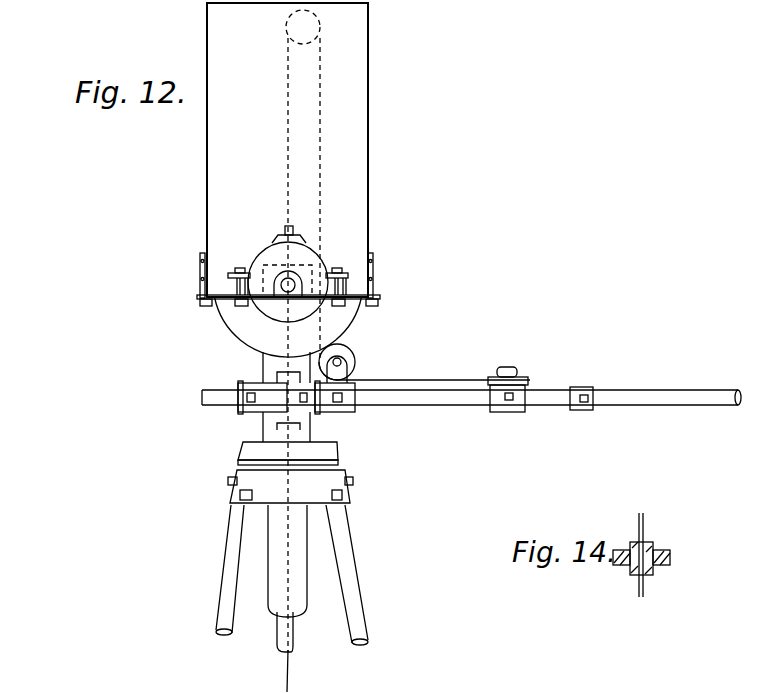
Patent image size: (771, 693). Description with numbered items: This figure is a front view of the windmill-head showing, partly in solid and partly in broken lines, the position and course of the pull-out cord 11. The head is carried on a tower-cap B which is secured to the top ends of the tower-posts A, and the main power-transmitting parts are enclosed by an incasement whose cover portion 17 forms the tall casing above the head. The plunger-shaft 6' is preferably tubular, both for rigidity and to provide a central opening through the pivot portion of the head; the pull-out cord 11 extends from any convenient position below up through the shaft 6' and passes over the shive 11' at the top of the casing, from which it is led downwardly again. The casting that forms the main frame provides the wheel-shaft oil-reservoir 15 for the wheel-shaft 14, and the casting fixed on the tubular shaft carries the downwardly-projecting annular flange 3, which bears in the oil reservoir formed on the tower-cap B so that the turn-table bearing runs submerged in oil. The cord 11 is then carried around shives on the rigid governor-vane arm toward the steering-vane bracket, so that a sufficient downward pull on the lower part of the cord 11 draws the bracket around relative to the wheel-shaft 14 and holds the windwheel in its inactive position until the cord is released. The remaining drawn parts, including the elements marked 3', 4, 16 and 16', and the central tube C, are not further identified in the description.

In FIG. 12, the pull-out cord 11 is at (394, 365).
In FIG. 14, the pull-out cord 11 is at (655, 555).
In FIG. 12, the shive 11' is at (319, 27).
In FIG. 12, the cover portion 17 is at (368, 72).
In FIG. 12, the wheel-shaft 14 is at (265, 304).
In FIG. 12, the wheel-shaft oil-reservoir 15 is at (282, 302).
In FIG. 12, the downwardly-projecting annular flange 3 is at (346, 359).
In FIG. 12, the cleat 3' is at (520, 383).
In FIG. 12, the guide block 4 is at (593, 388).
In FIG. 12, the support block 16 is at (271, 453).
In FIG. 12, the pillar 16' is at (308, 397).
In FIG. 12, the tower-cap B is at (290, 486).
In FIG. 12, the tower-posts A is at (230, 551).
In FIG. 12, the central tube C is at (307, 590).
In FIG. 12, the plunger-shaft 6' is at (300, 632).